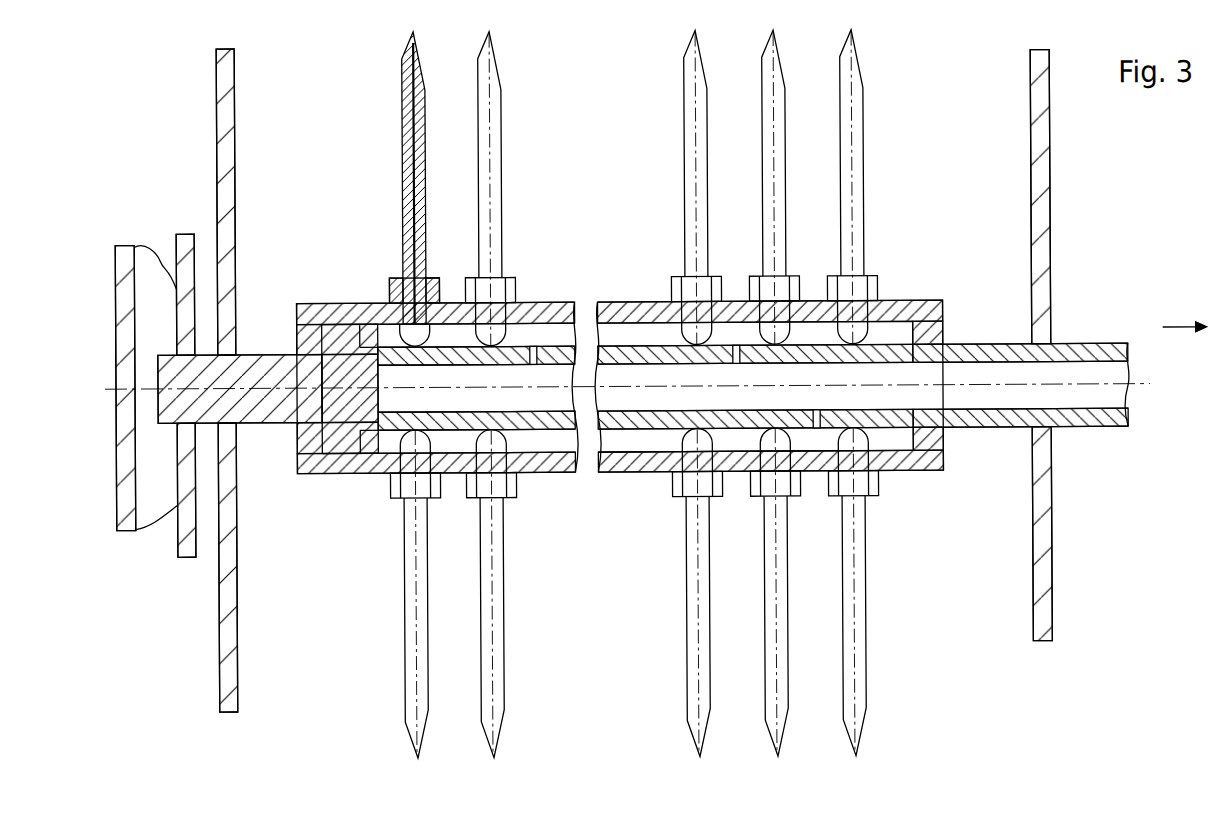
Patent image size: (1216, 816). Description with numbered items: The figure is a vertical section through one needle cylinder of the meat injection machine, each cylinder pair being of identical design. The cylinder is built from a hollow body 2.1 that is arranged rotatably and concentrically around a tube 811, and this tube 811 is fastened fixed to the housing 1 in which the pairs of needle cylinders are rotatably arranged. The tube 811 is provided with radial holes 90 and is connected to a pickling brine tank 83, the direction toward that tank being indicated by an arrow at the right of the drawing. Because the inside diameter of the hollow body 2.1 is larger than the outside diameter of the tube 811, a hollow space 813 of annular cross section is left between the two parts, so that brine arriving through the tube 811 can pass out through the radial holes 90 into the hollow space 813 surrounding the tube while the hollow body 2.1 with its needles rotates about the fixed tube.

The housing 1 is at (118, 520).
The hollow body 2.1 is at (903, 302).
The radial holes 90 is at (533, 345).
The tube 811 is at (972, 348).
The hollow space 813 is at (640, 442).
The pickling brine tank 83 is at (1184, 311).